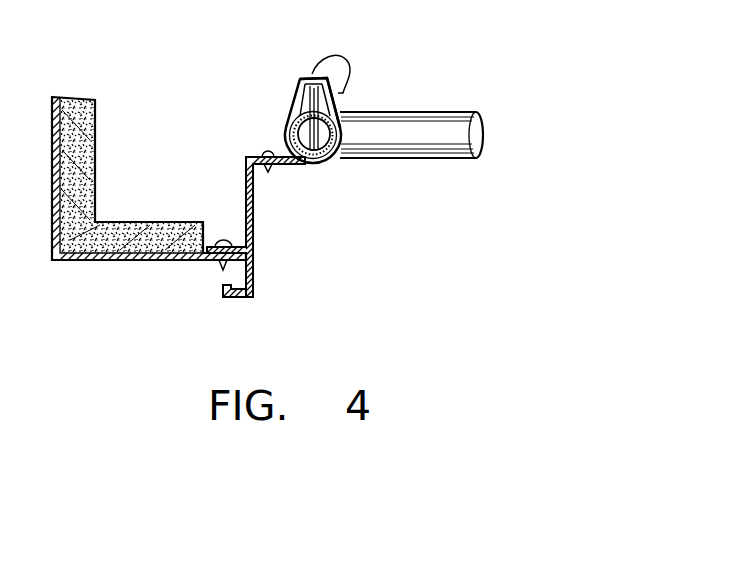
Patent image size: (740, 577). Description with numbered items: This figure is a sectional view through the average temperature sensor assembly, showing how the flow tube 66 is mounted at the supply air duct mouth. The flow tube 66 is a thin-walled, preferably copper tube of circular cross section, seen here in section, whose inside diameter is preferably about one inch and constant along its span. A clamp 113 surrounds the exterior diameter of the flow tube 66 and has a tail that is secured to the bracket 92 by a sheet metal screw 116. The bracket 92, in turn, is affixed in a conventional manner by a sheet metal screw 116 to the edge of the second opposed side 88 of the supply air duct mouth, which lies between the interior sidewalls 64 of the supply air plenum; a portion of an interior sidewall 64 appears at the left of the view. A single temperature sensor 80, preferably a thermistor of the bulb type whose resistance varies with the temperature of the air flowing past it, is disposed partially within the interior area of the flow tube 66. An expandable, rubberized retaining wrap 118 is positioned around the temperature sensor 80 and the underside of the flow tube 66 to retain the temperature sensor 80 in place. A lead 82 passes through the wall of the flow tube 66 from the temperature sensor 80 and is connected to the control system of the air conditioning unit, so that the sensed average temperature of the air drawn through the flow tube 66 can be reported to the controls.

The interior sidewall 64 is at (95, 122).
The flow tube 66 is at (417, 111).
The temperature sensor 80 is at (314, 130).
The lead 82 is at (372, 64).
The second opposed side 88 is at (254, 275).
The bracket 92 is at (254, 217).
The clamp 113 is at (300, 167).
The sheet metal screw 116 is at (223, 240).
The retaining wrap 118 is at (297, 100).